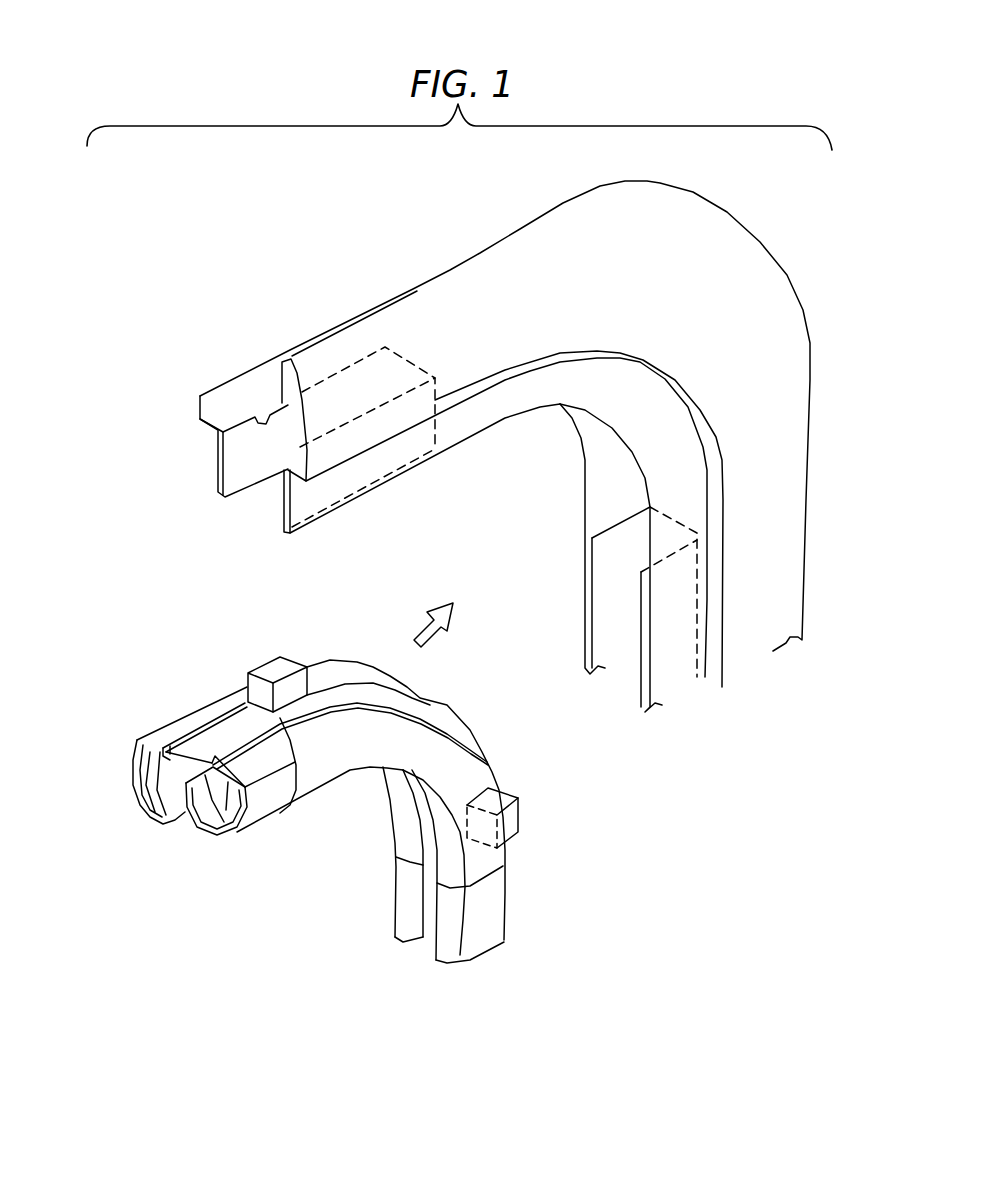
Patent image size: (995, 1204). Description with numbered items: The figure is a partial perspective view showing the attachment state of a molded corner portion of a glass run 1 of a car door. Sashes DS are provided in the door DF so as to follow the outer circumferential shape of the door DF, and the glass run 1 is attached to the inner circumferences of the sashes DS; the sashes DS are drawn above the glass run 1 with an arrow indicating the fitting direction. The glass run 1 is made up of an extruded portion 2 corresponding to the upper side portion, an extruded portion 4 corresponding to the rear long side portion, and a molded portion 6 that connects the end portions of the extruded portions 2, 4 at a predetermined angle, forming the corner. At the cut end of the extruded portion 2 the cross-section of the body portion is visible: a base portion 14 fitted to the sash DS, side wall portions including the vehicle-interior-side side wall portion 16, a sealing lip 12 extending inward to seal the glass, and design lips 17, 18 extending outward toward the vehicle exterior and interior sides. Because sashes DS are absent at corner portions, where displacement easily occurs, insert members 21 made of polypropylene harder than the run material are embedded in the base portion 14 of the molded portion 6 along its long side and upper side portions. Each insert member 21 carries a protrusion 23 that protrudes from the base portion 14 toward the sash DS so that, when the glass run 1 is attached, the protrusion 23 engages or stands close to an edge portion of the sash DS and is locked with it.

The glass run 1 is at (353, 828).
The extruded portion 2 is at (178, 828).
The extruded portion 4 is at (449, 946).
The molded portion 6 is at (407, 863).
The sealing lip 12 is at (177, 810).
The base portion 14 is at (296, 710).
The vehicle-interior-side side wall portion 16 is at (229, 817).
The vehicle-exterior-side design lip 17 is at (135, 782).
The vehicle-interior-side design lip 18 is at (282, 792).
The insert member 21 is at (435, 735).
The protrusion 23 is at (435, 735).
The door DF is at (505, 434).
The sash DS is at (448, 542).